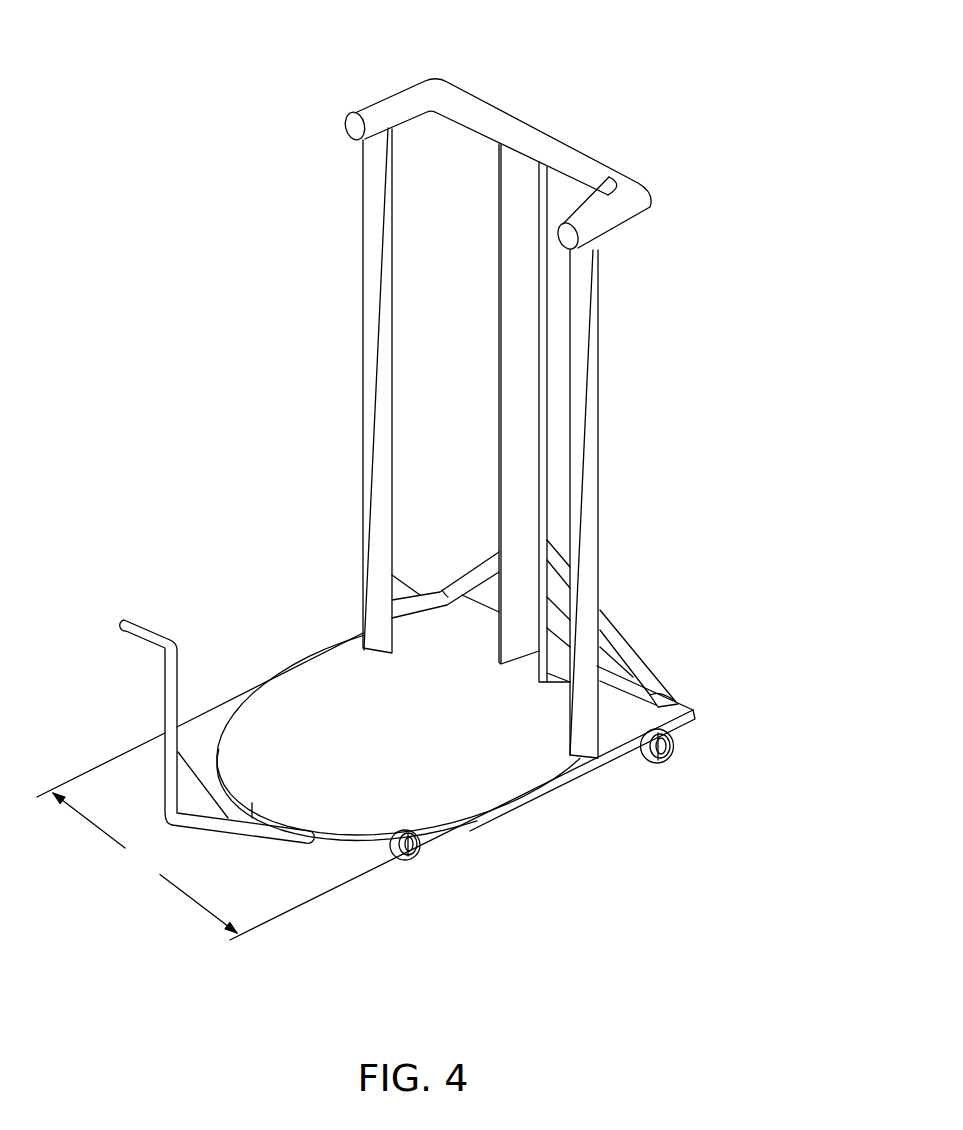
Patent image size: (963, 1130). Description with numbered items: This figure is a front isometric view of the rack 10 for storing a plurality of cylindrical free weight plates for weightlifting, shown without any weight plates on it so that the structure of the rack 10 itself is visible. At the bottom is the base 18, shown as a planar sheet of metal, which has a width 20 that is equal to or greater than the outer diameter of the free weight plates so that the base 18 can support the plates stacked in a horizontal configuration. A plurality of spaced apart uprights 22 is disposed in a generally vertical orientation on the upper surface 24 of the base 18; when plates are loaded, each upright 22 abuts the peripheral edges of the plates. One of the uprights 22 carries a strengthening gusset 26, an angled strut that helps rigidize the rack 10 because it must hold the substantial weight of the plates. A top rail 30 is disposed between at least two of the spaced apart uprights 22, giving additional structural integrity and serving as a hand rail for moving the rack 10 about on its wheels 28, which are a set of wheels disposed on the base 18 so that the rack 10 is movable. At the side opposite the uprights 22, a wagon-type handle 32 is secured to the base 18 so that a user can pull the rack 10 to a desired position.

The rack for storing free weight plates 10 is at (562, 98).
The base 18 is at (493, 770).
The width 20 is at (145, 863).
The uprights 22 is at (520, 375).
The upper surface 24 is at (295, 697).
The strengthening gusset 26 is at (632, 660).
The wheels 28 is at (657, 763).
The top rail 30 is at (475, 107).
The handle 32 is at (148, 637).